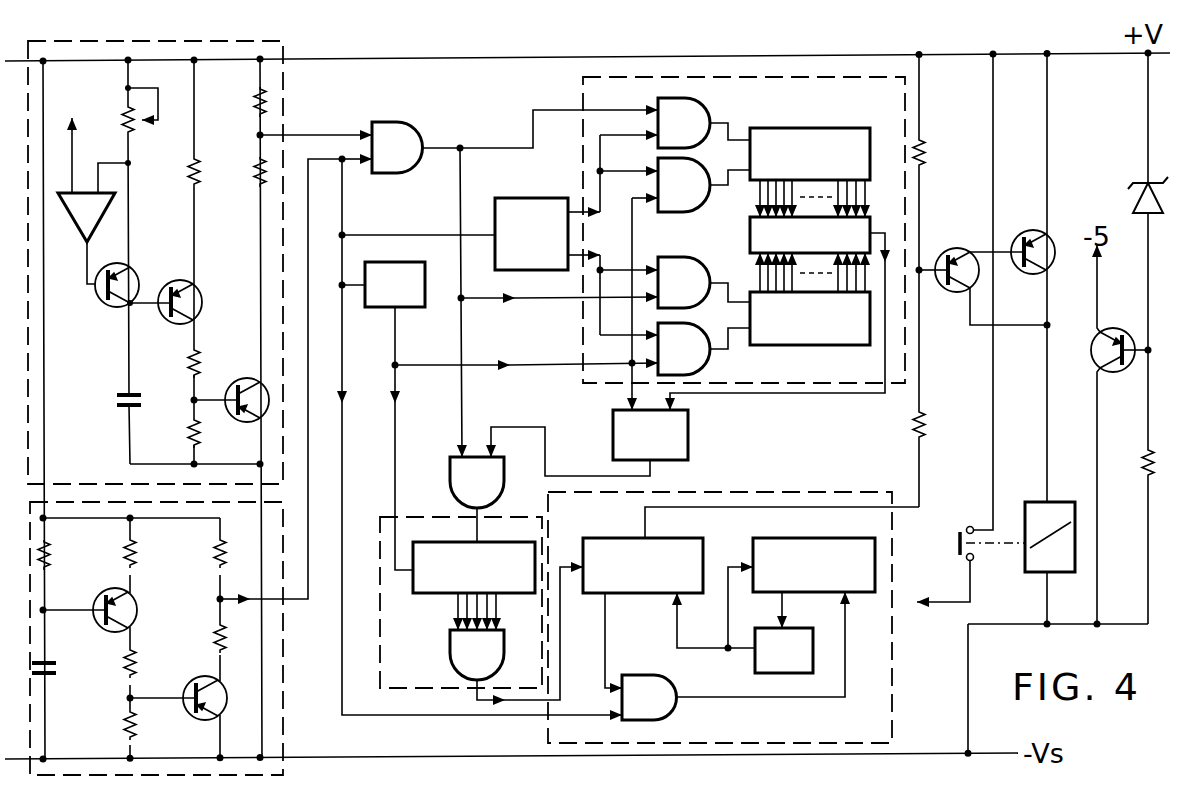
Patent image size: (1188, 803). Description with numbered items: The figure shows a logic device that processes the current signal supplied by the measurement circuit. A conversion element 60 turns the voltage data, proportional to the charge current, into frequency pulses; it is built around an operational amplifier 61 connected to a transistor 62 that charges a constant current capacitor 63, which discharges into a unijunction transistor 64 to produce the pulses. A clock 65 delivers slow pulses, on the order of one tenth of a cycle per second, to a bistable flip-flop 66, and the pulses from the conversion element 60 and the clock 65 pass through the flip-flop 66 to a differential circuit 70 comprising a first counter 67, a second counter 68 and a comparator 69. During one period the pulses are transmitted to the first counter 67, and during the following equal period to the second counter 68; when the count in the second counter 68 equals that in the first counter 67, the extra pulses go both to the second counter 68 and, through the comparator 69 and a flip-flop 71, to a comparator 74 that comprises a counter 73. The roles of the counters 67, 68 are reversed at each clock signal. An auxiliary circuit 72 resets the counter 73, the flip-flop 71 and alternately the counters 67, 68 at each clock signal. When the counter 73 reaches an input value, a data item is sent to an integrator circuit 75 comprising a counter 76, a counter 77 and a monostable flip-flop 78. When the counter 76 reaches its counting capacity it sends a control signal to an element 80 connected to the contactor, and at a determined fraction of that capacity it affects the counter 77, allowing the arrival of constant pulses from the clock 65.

The conversion element 60 is at (283, 85).
The operational amplifier 61 is at (81, 245).
The transistor 62 is at (136, 262).
The constant current capacitor 63 is at (116, 405).
The unijunction transistor 64 is at (198, 292).
The clock 65 is at (272, 718).
The bistable flip-flop 66 is at (553, 218).
The first counter 67 is at (826, 142).
The second counter 68 is at (818, 320).
The comparator 69 is at (766, 235).
The differential circuit 70 is at (590, 84).
The flip-flop 71 is at (686, 440).
The auxiliary circuit 72 is at (418, 305).
The counter 73 is at (438, 572).
The comparator 74 is at (406, 522).
The integrator circuit 75 is at (856, 497).
The counter 76 is at (640, 572).
The counter 77 is at (858, 570).
The monostable flip-flop 78 is at (775, 650).
The element 80 is at (1036, 512).